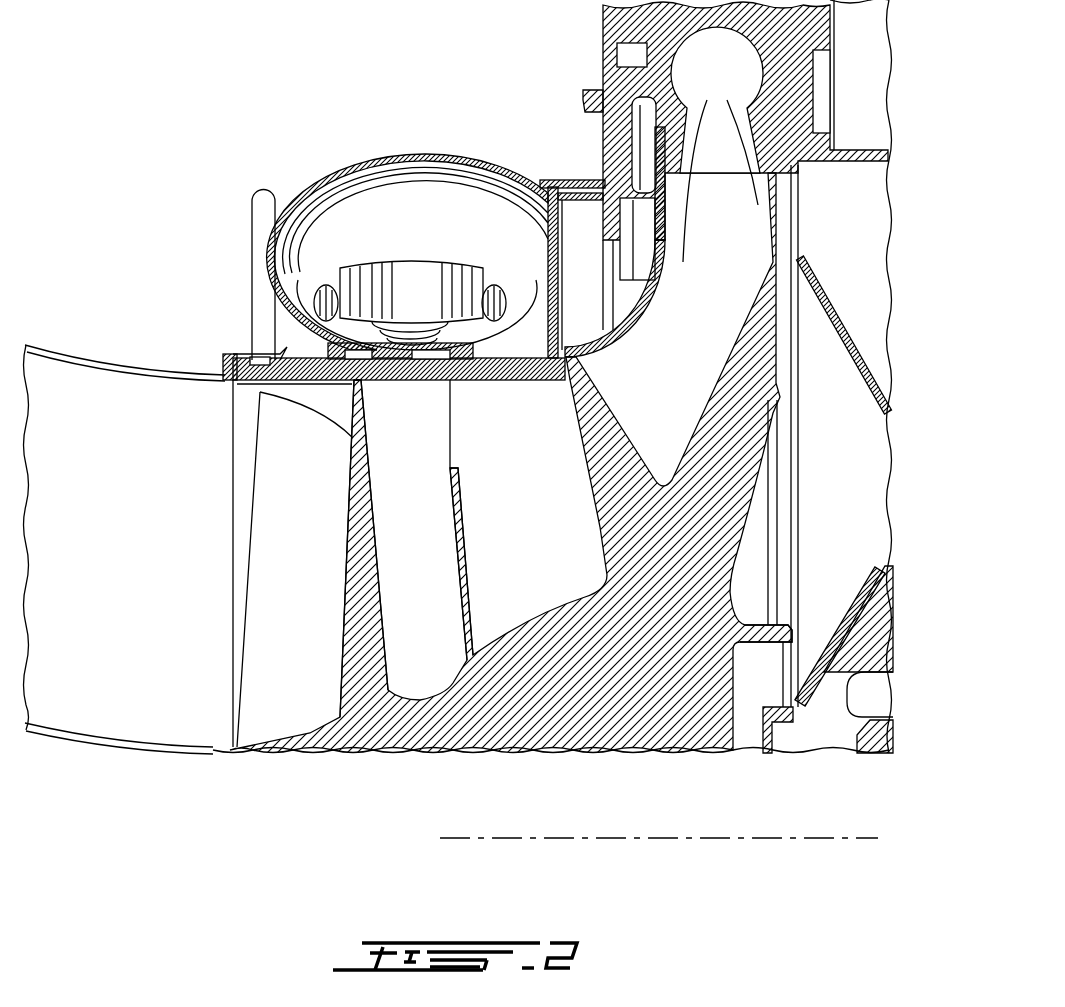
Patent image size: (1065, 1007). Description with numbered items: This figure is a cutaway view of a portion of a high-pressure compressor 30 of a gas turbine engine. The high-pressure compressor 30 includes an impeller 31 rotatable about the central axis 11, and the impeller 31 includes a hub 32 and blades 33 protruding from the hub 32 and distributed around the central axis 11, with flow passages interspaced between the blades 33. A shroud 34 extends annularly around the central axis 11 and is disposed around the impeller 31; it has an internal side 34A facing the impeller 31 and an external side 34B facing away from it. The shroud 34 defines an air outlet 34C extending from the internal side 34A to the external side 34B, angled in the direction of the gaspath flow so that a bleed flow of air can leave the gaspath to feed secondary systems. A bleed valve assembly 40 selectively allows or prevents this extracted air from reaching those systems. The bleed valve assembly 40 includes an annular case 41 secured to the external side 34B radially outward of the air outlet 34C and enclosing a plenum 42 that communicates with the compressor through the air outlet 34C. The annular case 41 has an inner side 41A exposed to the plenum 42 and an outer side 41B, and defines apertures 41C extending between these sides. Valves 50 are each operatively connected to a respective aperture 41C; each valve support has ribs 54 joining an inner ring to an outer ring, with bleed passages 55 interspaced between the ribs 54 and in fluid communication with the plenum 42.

The central axis 11 is at (740, 842).
The high-pressure compressor 30 is at (862, 193).
The impeller 31 is at (577, 708).
The hub 32 is at (660, 655).
The blades 33 is at (455, 618).
The shroud 34 is at (380, 440).
The internal side 34A is at (658, 280).
The external side 34B is at (646, 302).
The air outlet 34C is at (395, 374).
The bleed valve assembly 40 is at (385, 221).
The annular case 41 is at (357, 208).
The inner side 41A is at (324, 198).
The outer side 41B is at (284, 193).
The apertures 41C is at (400, 193).
The plenum 42 is at (521, 228).
The valves 50 is at (364, 254).
The ribs 54 is at (318, 308).
The bleed passages 55 is at (411, 292).